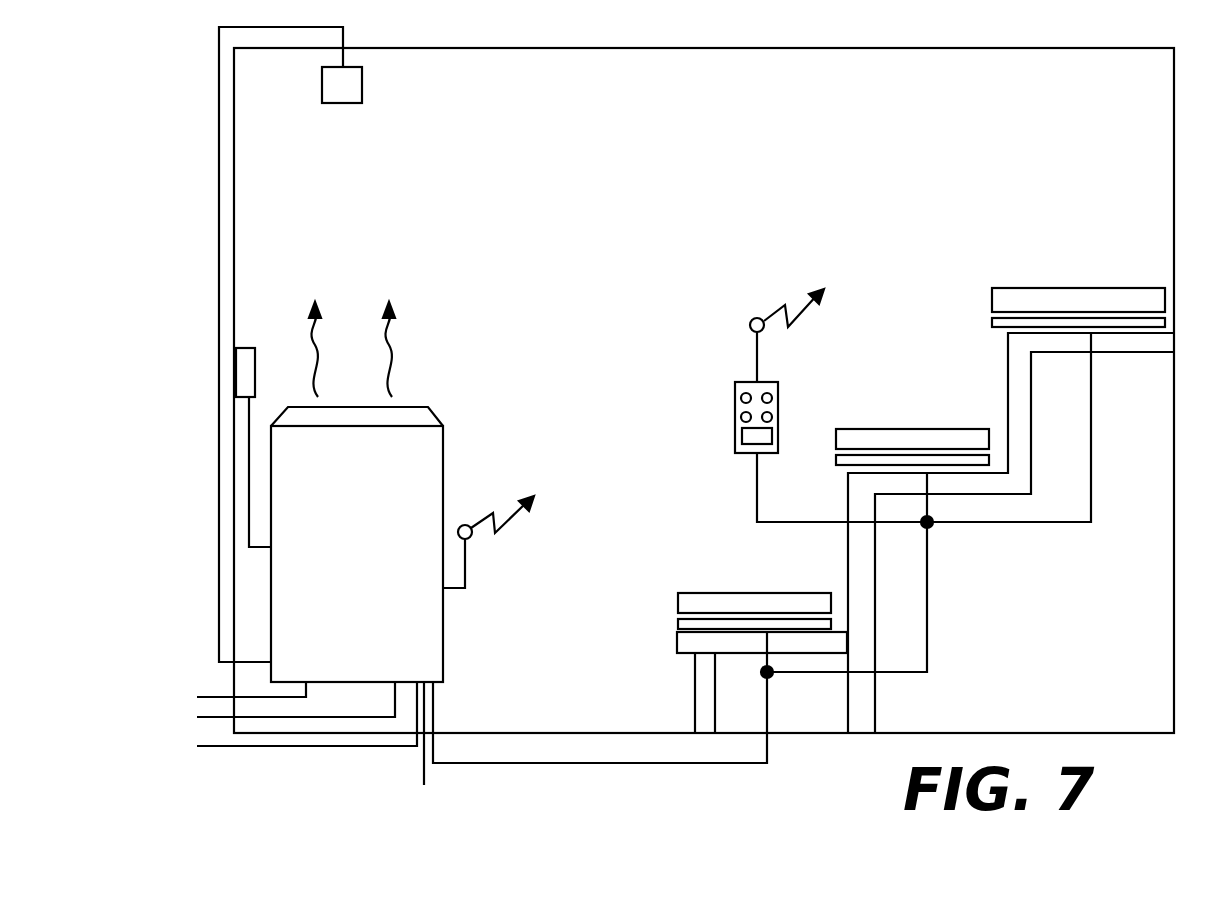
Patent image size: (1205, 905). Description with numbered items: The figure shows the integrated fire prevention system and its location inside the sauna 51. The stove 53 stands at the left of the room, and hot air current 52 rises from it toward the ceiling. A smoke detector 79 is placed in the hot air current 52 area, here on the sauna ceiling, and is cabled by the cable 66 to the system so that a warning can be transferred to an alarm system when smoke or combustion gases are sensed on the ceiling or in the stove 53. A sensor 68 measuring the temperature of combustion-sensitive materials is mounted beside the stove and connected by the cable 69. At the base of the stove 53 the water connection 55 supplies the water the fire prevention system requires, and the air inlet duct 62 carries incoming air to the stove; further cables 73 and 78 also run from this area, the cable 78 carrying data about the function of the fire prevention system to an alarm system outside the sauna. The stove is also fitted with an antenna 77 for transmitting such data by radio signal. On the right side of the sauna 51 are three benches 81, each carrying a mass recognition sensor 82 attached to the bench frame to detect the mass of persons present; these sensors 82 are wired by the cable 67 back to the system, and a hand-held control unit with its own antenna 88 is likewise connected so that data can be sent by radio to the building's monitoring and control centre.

The sauna 51 is at (678, 48).
The hot air current 52 is at (320, 367).
The stove frame 53 is at (443, 458).
The water connection 55 is at (200, 697).
The air inlet duct 62 is at (197, 717).
The cable 66 is at (219, 322).
The cable 67 is at (520, 762).
The sensor 68 is at (248, 348).
The cable 69 is at (249, 478).
The cable 73 is at (262, 746).
The antenna 77 is at (468, 541).
The cable 78 is at (424, 775).
The smoke detector 79 is at (338, 103).
The bench 81 is at (730, 600).
The mass recognition sensor 82 is at (678, 625).
The antenna 88 is at (750, 327).